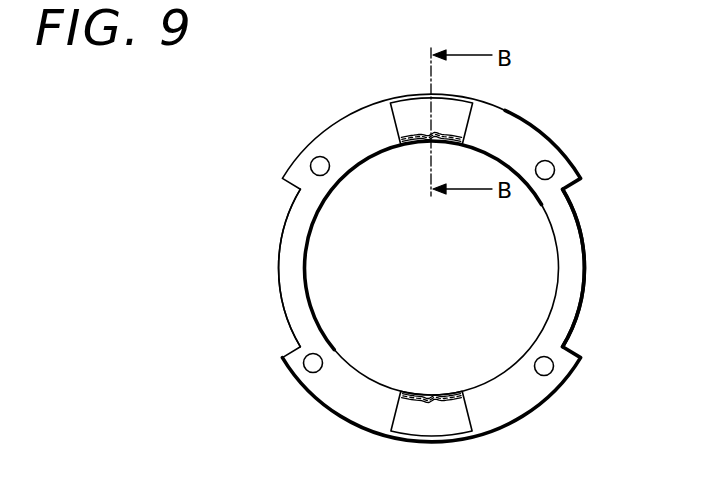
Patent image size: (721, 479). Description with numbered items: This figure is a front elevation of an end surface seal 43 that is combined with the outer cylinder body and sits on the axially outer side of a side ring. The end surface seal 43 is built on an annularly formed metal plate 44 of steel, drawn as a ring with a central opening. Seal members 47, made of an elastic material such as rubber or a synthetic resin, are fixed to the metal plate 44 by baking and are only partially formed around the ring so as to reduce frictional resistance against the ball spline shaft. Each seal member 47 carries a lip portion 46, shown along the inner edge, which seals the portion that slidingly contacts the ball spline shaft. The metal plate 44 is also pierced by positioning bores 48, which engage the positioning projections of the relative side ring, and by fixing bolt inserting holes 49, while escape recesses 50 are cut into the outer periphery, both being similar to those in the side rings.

The end surface seal 43 is at (336, 116).
The metal plate 44 is at (508, 138).
The lip portion 46 is at (424, 392).
The seal member 47 is at (416, 112).
The positioning bore 48 is at (547, 171).
The fixing bolt inserting hole 49 is at (326, 167).
The escape recess 50 is at (281, 250).